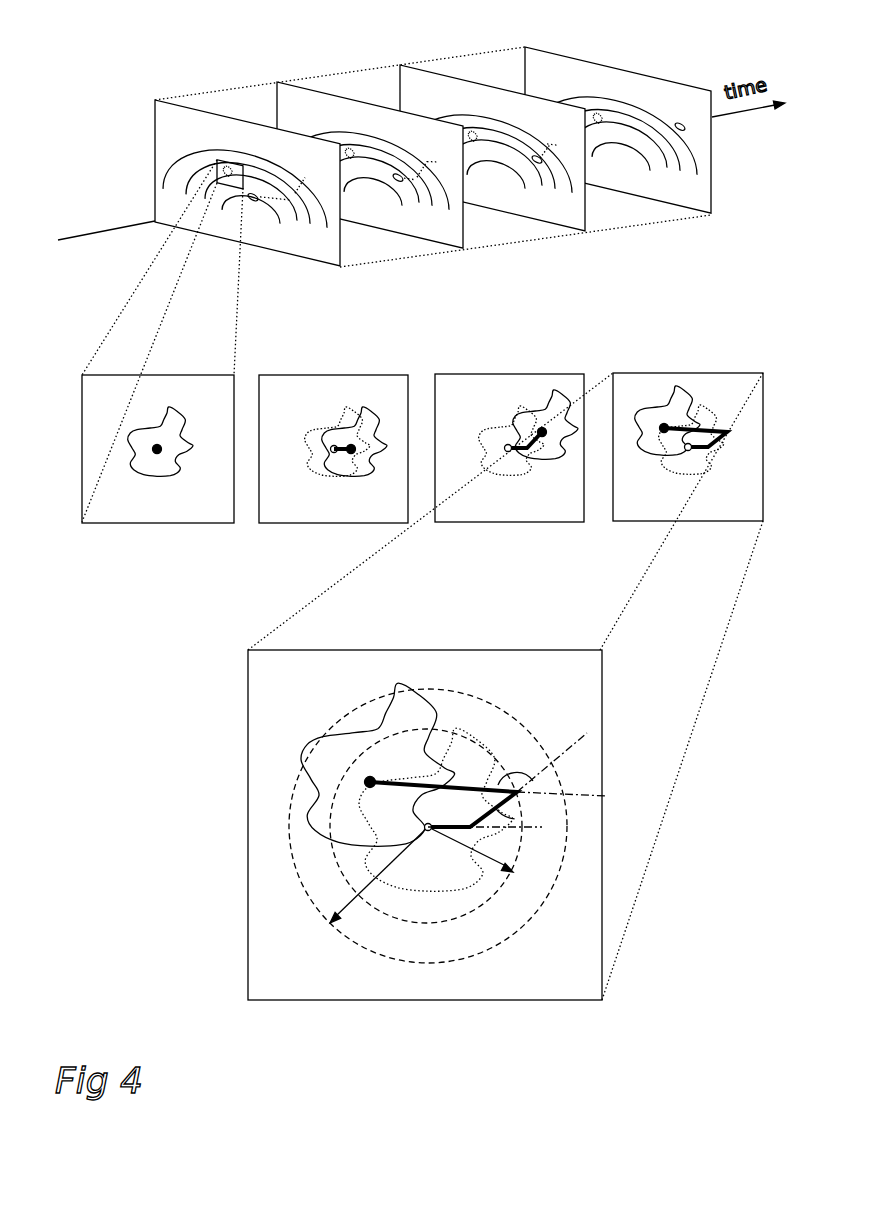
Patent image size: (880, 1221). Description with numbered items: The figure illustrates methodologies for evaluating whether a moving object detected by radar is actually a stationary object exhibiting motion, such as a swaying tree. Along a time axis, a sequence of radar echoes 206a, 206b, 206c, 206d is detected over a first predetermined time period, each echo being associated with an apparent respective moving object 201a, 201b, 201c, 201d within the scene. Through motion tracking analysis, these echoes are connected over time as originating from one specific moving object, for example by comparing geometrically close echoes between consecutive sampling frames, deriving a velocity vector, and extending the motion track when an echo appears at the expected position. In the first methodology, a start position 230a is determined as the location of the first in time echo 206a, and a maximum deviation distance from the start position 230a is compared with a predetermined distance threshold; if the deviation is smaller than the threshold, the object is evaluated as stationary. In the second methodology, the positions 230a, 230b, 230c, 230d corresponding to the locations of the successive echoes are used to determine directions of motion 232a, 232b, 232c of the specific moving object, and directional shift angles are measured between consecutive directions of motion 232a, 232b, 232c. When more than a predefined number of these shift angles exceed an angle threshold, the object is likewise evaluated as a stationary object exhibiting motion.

The apparent moving object 201a is at (229, 167).
The apparent moving object 201b is at (350, 150).
The apparent moving object 201c is at (472, 132).
The apparent moving object 201d is at (598, 117).
The detected radar echo 206a is at (303, 238).
The detected radar echo 206b is at (428, 223).
The detected radar echo 206c is at (546, 201).
The detected radar echo 206d is at (673, 184).
The start position 230a is at (160, 452).
The position 230b is at (354, 452).
The position 230c is at (545, 435).
The position 230d is at (668, 433).
The direction of motion 232a is at (517, 827).
The direction of motion 232b is at (572, 748).
The direction of motion 232c is at (583, 797).